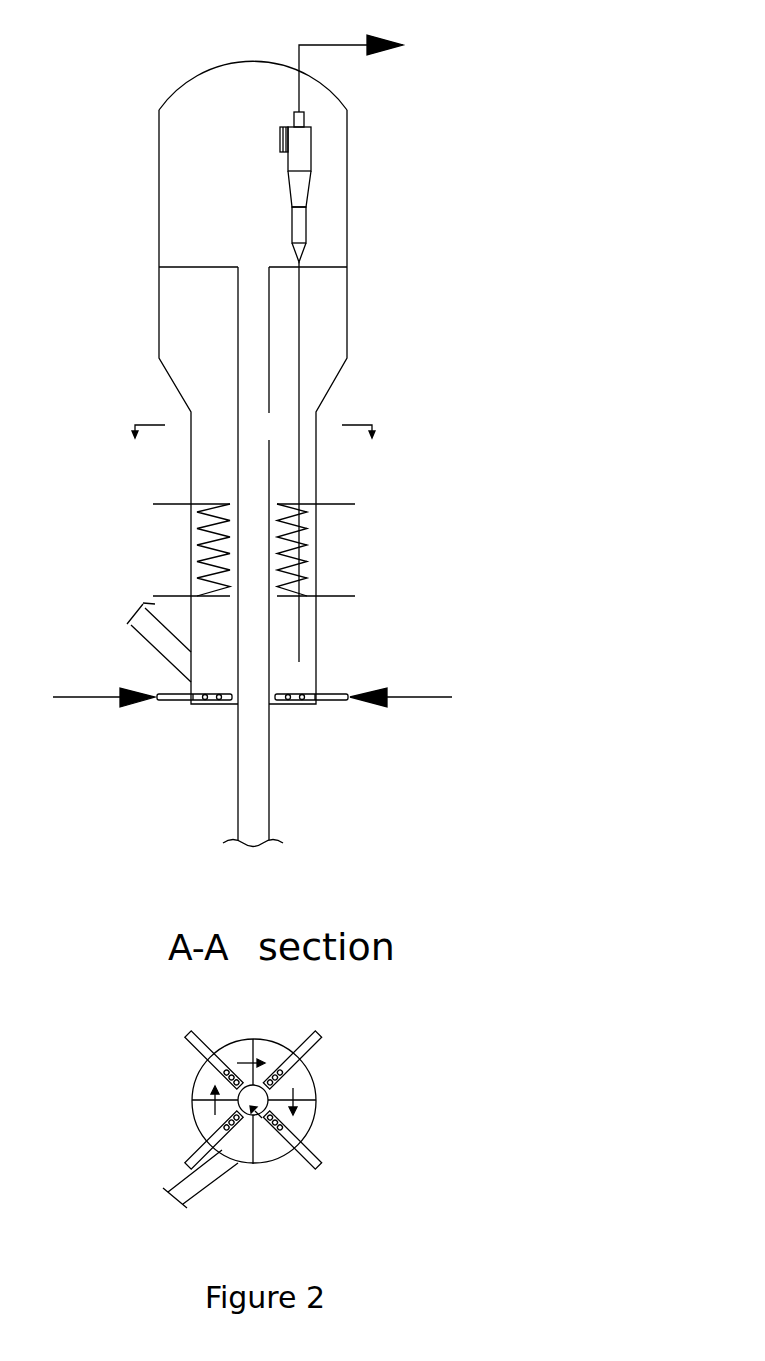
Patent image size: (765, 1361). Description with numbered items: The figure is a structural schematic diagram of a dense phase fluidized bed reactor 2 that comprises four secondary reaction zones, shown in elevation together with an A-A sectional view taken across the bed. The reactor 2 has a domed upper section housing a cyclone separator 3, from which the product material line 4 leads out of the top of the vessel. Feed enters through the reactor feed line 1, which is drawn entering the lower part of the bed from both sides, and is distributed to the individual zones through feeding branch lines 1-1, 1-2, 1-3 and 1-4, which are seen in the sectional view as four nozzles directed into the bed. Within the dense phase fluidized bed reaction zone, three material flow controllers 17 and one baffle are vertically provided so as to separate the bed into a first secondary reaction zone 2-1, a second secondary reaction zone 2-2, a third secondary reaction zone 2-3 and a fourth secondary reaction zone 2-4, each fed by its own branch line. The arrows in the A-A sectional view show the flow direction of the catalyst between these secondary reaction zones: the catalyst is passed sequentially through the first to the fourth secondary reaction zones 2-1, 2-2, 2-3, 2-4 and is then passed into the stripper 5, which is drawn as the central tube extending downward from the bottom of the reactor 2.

The reactor feed line 1 is at (467, 748).
The dense phase fluidized bed reactor 2 is at (347, 300).
The cyclone separator 3 is at (313, 148).
The product material line 4 is at (313, 45).
The stripper 5 is at (269, 773).
The material flow controller 17 is at (210, 377).
The feeding branch line of 1st secondary reaction zone 1-1 is at (197, 1153).
The feeding branch line of 2nd secondary reaction zone 1-2 is at (183, 1038).
The feeding branch line of 3rd secondary reaction zone 1-3 is at (320, 1035).
The feeding branch line of 4th secondary reaction zone 1-4 is at (317, 1153).
The 1st secondary reaction zone 2-1 is at (240, 1142).
The 2nd secondary reaction zone 2-2 is at (208, 1080).
The 3rd secondary reaction zone 2-3 is at (297, 1082).
The 4th secondary reaction zone 2-4 is at (267, 1138).